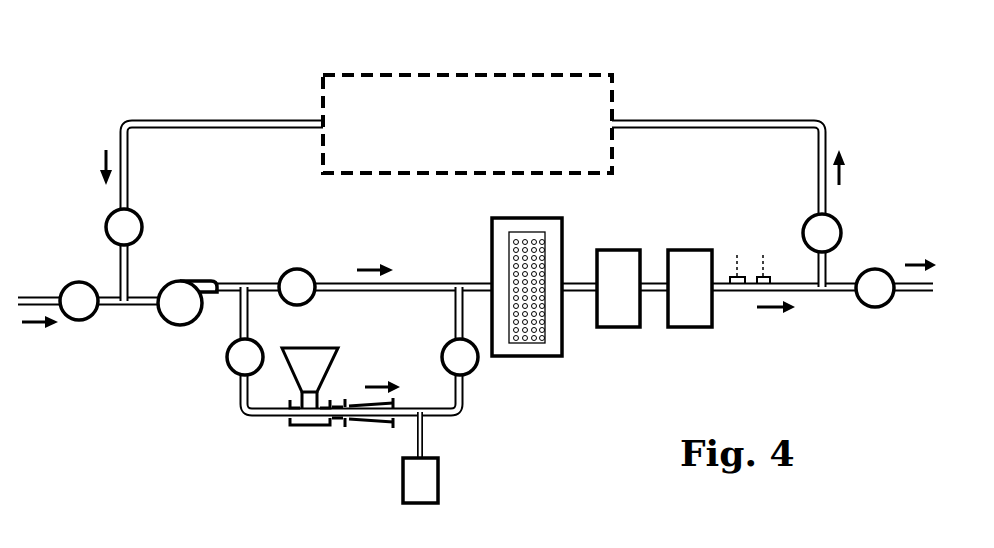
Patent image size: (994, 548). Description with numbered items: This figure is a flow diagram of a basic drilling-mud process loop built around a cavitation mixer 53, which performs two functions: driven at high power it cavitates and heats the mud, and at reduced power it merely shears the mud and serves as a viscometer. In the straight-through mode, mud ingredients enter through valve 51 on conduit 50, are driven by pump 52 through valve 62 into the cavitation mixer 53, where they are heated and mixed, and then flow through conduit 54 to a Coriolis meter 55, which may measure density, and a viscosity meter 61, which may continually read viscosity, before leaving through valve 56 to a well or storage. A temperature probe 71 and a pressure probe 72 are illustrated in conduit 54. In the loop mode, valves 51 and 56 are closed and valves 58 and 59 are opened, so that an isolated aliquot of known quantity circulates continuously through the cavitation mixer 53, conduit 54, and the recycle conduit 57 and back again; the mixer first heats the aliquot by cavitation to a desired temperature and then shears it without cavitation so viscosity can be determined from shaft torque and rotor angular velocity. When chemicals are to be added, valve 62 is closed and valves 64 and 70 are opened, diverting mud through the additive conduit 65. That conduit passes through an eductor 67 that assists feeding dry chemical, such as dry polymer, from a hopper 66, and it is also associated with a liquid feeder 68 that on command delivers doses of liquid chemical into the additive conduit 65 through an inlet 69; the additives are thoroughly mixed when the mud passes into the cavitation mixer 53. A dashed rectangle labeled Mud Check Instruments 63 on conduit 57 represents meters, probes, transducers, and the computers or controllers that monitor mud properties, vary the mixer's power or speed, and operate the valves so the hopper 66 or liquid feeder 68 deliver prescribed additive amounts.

The conduit 50 is at (108, 310).
The valve 51 is at (76, 282).
The pump 52 is at (185, 325).
The cavitation mixer 53 is at (548, 357).
The conduit 54 is at (575, 283).
The Coriolis meter 55 is at (622, 327).
The valve 56 is at (880, 308).
The conduit 57 is at (272, 122).
The valve 58 is at (143, 226).
The valve 59 is at (840, 232).
The viscosity meter 61 is at (698, 327).
The valve 62 is at (303, 268).
The Mud Check Instruments 63 is at (428, 75).
The valve 64 is at (228, 365).
The additive conduit 65 is at (255, 420).
The hopper 66 is at (335, 372).
The eductor 67 is at (330, 425).
The liquid feeder 68 is at (403, 482).
The inlet 69 is at (430, 432).
The valve 70 is at (478, 365).
The temperature probe 71 is at (730, 230).
The pressure probe 72 is at (760, 228).